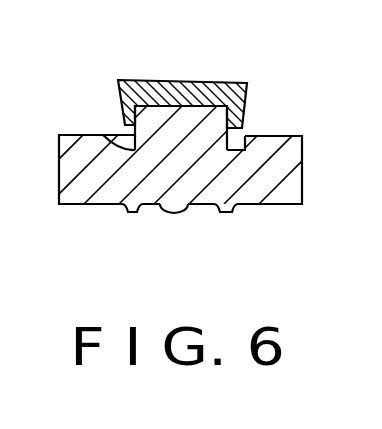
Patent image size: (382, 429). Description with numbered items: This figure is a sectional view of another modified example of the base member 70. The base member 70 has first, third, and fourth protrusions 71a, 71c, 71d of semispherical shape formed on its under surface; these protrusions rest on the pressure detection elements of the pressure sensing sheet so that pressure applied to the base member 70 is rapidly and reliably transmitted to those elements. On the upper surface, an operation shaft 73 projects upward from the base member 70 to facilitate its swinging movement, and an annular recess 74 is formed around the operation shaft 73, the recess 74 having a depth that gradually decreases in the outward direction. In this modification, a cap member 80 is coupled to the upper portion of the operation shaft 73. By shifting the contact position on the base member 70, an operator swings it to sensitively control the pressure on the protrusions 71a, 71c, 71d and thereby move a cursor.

The base member 70 is at (369, 238).
The first protrusion 71a is at (171, 214).
The third protrusion 71c is at (227, 213).
The fourth protrusion 71d is at (135, 209).
The operation shaft 73 is at (147, 112).
The recess 74 is at (247, 134).
The cap member 80 is at (204, 80).